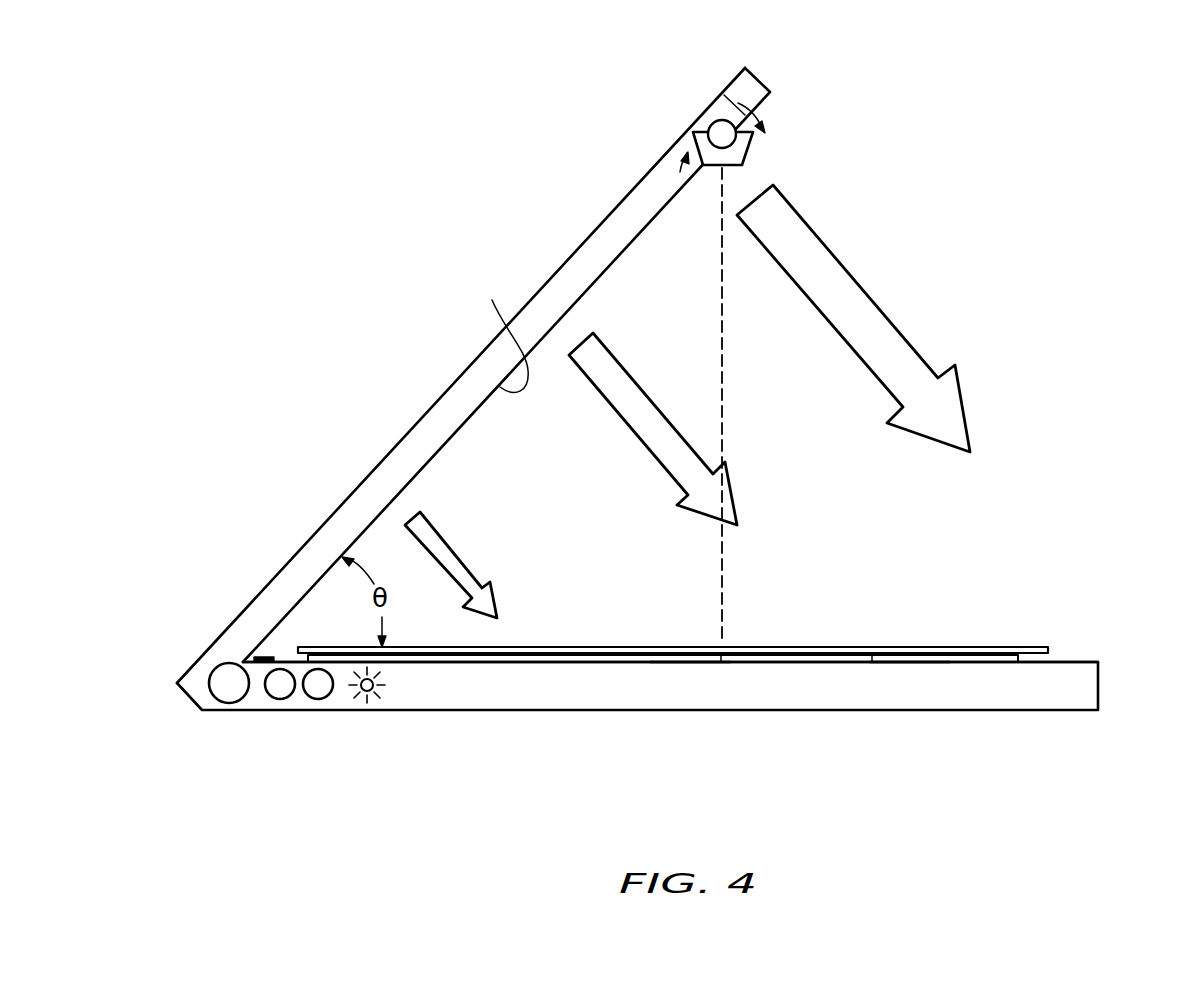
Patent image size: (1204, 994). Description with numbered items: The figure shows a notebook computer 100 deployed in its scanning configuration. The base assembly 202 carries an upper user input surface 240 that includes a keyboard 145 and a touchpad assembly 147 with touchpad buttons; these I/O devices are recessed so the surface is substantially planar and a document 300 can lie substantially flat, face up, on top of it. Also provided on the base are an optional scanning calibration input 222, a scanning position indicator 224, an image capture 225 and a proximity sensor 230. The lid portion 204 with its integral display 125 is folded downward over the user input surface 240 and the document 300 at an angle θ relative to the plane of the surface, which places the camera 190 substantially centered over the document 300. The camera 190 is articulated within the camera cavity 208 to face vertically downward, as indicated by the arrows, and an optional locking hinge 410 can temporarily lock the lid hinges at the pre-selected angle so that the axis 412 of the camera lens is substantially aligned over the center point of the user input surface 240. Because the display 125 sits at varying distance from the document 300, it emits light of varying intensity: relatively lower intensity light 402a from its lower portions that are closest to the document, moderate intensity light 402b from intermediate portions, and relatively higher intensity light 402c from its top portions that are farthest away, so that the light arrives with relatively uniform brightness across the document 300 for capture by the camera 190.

The notebook computer 100 is at (1048, 125).
The display 125 is at (492, 300).
The keyboard 145 is at (688, 662).
The touchpad assembly 147 is at (905, 663).
The camera 190 is at (750, 147).
The base assembly 202 is at (1098, 688).
The lid portion 204 is at (435, 403).
The camera cavity 208 is at (758, 84).
The scanning calibration input 222 is at (278, 694).
The scanning position indicator 224 is at (372, 690).
The image capture 225 is at (318, 694).
The proximity sensor 230 is at (258, 648).
The upper user input surface 240 is at (1065, 662).
The document 300 is at (985, 648).
The lower intensity light 402a is at (448, 560).
The moderate intensity light 402b is at (627, 387).
The higher intensity light 402c is at (860, 313).
The locking hinge 410 is at (230, 697).
The axis 412 is at (722, 603).